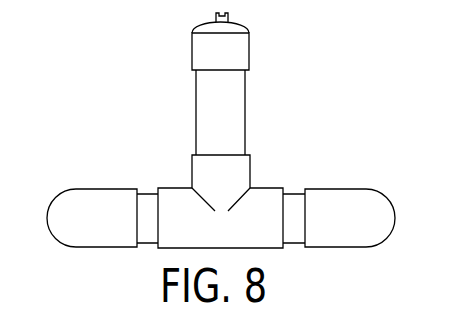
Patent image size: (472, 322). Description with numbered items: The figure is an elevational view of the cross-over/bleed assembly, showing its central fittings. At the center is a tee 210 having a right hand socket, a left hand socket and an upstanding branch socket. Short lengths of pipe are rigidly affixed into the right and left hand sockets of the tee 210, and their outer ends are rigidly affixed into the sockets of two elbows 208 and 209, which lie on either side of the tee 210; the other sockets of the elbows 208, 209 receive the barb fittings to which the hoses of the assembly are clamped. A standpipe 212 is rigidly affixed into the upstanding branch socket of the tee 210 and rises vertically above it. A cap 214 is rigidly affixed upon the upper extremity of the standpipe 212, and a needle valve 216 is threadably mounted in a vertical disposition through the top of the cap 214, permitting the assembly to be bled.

The elbow 208 is at (320, 189).
The elbow 209 is at (90, 189).
The tee 210 is at (192, 178).
The standpipe 212 is at (245, 118).
The cap 214 is at (249, 55).
The needle valve 216 is at (215, 13).